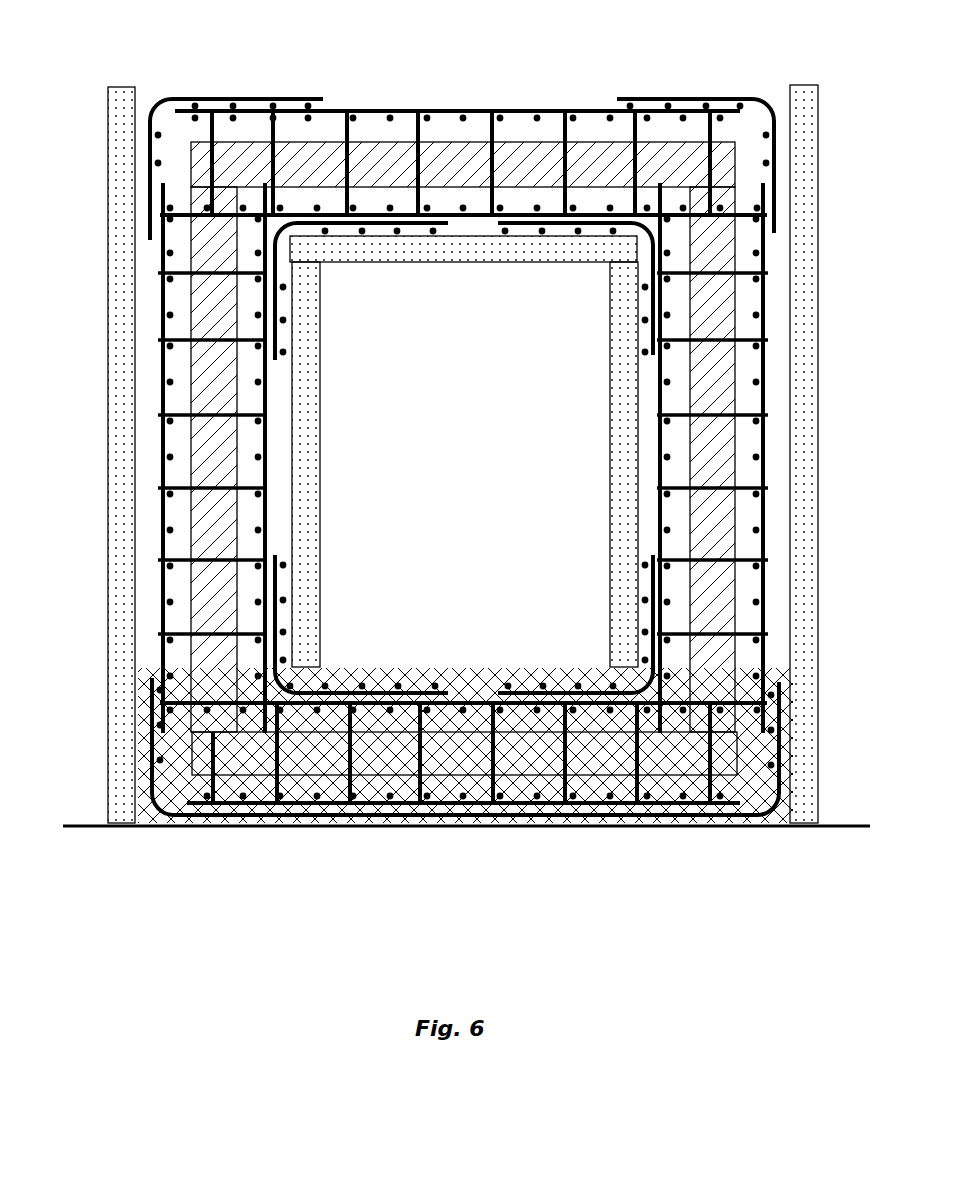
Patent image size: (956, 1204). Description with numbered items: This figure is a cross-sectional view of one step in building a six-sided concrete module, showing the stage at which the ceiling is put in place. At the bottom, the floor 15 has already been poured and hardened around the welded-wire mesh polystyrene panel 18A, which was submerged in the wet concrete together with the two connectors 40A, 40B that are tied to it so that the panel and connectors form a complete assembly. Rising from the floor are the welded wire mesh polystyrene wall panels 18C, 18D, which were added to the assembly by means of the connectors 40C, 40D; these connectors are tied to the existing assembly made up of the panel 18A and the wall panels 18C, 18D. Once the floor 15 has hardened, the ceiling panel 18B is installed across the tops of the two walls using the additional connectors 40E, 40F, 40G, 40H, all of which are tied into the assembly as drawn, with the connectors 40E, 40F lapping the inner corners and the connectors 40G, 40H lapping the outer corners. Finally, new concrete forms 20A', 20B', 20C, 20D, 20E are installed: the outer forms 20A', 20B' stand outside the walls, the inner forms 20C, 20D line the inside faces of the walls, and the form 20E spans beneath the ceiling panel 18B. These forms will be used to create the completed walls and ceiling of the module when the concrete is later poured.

The floor 15 is at (567, 824).
The welded-wire mesh polystyrene panel 18A is at (355, 828).
The ceiling panel 18B is at (452, 111).
The welded wire mesh polystyrene wall panel 18C is at (267, 440).
The welded wire mesh polystyrene wall panel 18D is at (657, 440).
The concrete form 20A' is at (112, 429).
The concrete form 20B' is at (801, 429).
The concrete form 20C is at (318, 368).
The concrete form 20D is at (612, 368).
The concrete form 20E is at (465, 262).
The connector 40A is at (150, 753).
The connector 40B is at (782, 822).
The connector 40C is at (280, 645).
The connector 40D is at (650, 647).
The connector 40E is at (290, 240).
The connector 40F is at (612, 240).
The connector 40G is at (225, 99).
The connector 40H is at (680, 99).